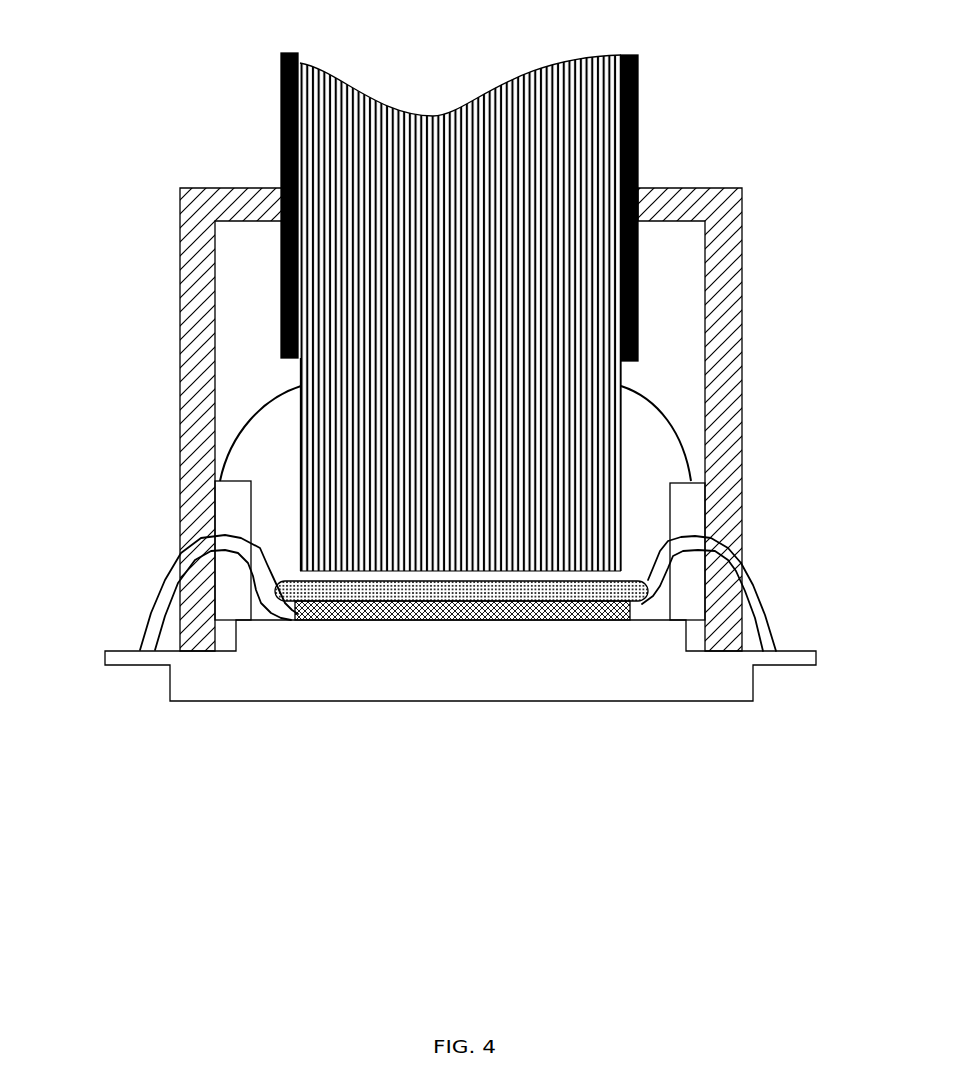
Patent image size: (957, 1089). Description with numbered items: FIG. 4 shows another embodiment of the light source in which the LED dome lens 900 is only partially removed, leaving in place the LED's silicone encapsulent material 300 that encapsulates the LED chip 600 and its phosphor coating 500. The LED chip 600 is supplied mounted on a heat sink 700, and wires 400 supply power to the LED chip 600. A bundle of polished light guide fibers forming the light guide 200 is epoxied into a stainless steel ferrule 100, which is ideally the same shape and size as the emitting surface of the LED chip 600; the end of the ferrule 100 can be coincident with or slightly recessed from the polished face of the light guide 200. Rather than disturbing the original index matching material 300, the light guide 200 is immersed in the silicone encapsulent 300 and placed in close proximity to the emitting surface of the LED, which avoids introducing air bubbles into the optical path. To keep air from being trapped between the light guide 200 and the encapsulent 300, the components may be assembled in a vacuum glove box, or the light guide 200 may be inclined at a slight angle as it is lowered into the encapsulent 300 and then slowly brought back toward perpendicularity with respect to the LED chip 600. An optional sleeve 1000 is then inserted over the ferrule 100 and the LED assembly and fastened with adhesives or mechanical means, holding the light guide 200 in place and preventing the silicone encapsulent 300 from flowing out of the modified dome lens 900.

The ferrule 100 is at (640, 144).
The light guide 200 is at (512, 122).
The silicone encapsulent material 300 is at (660, 420).
The wires 400 is at (140, 566).
The phosphor coating 500 is at (269, 554).
The LED chip 600 is at (595, 627).
The heat sink 700 is at (279, 712).
The LED dome lens 900 is at (200, 502).
The sleeve 1000 is at (164, 199).